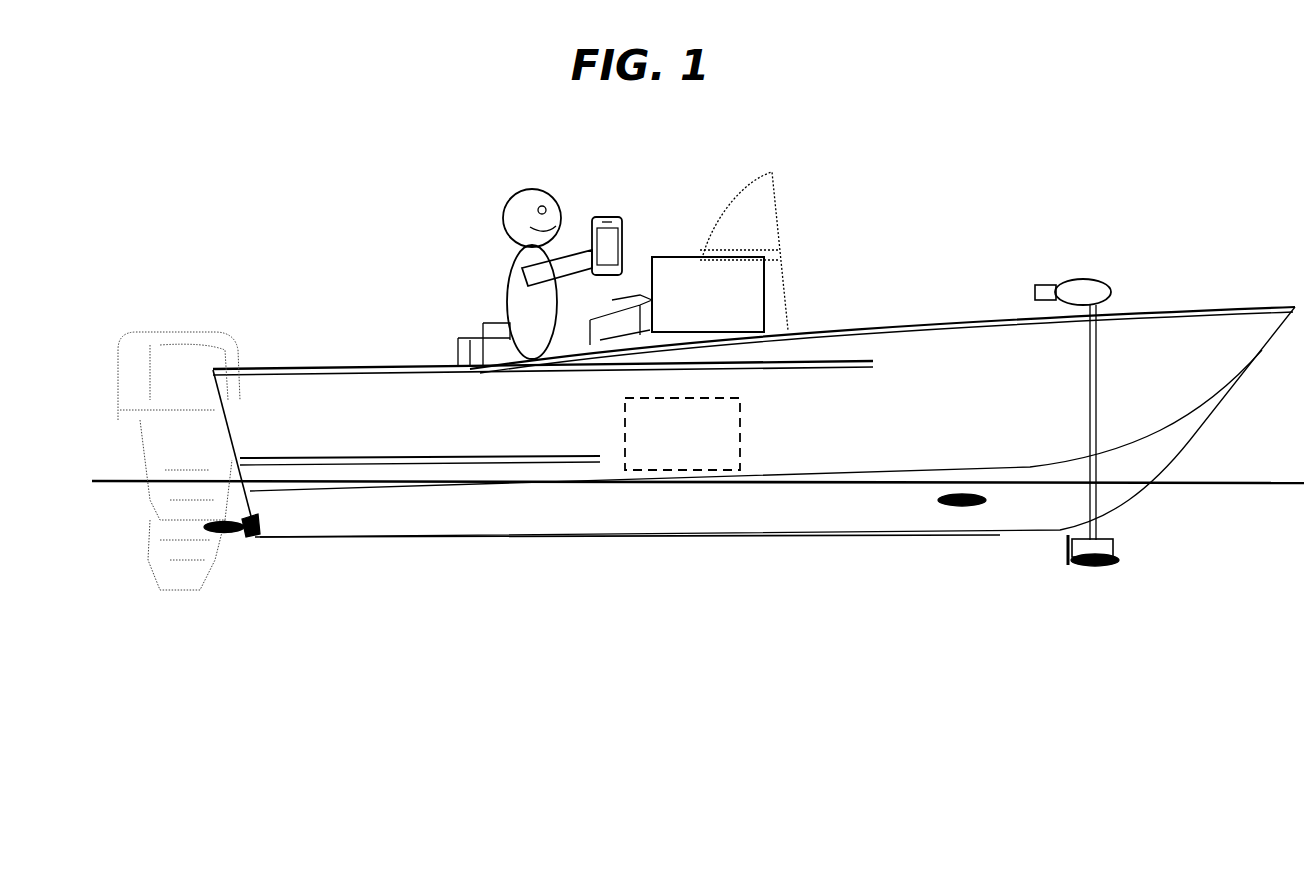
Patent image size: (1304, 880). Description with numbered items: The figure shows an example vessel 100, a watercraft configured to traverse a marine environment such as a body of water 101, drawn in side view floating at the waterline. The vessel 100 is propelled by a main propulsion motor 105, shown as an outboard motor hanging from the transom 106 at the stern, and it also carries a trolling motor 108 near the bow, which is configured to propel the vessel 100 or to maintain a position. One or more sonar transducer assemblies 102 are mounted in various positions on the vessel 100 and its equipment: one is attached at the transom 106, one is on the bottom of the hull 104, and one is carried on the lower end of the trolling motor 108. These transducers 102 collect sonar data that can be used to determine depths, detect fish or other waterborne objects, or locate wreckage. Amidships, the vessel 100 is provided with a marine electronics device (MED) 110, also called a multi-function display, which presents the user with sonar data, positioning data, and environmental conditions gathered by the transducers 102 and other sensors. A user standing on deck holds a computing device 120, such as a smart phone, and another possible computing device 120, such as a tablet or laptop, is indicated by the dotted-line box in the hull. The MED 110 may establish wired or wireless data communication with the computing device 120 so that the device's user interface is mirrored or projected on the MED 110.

The vessel 100 is at (940, 320).
The body of water 101 is at (698, 559).
The sonar transducer assemblies 102 is at (227, 533).
The hull 104 is at (528, 523).
The main propulsion motor 105 is at (152, 328).
The transom 106 is at (222, 402).
The trolling motor 108 is at (1108, 547).
The marine electronics device (MED) 110 is at (708, 294).
The computing device 120 is at (605, 215).